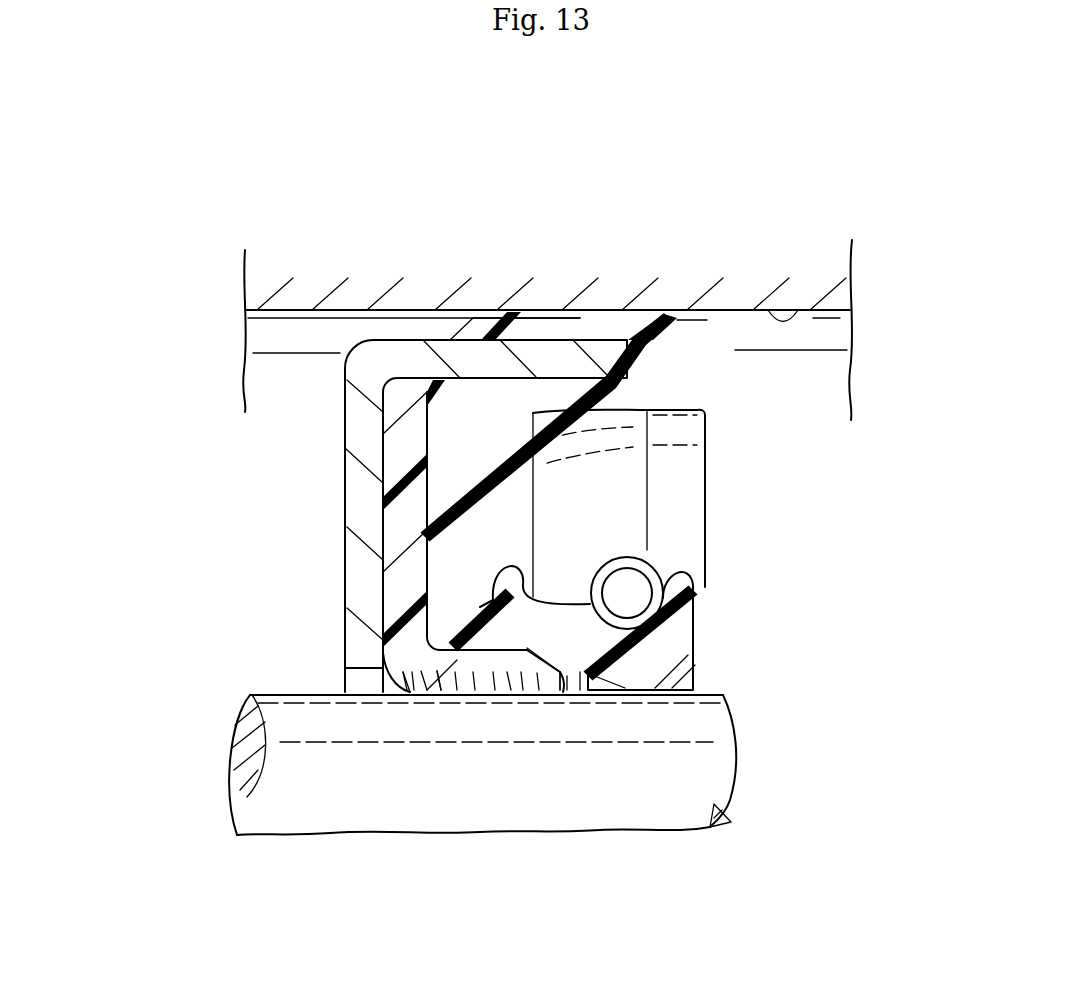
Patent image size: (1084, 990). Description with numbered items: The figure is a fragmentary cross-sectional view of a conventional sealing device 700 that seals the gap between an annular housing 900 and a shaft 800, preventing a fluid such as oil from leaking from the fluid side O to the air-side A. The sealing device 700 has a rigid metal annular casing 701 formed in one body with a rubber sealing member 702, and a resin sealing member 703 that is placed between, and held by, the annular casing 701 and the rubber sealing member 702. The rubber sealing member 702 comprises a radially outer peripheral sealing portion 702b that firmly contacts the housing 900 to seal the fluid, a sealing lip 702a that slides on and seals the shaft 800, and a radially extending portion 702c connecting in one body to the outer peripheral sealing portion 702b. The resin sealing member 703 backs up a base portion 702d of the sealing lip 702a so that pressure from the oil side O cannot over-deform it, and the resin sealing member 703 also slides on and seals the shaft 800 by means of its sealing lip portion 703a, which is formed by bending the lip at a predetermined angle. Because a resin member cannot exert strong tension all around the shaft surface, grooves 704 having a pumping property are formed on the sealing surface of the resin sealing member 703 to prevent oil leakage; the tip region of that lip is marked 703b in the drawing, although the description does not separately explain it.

The sealing device 700 is at (547, 553).
The annular casing 701 is at (343, 478).
The rubber sealing member 702 is at (526, 441).
The sealing lip 702a is at (697, 687).
The radially outer peripheral sealing portion 702b is at (593, 320).
The radially extending portion 702c is at (452, 555).
The base portion 702d is at (390, 656).
The resin sealing member 703 is at (365, 662).
The sealing lip portion 703a is at (480, 690).
The lip tip portion 703b is at (403, 670).
The grooves 704 is at (537, 670).
The shaft 800 is at (707, 763).
The annular housing 900 is at (806, 312).
The air-side A is at (103, 530).
The fluid side O is at (972, 538).